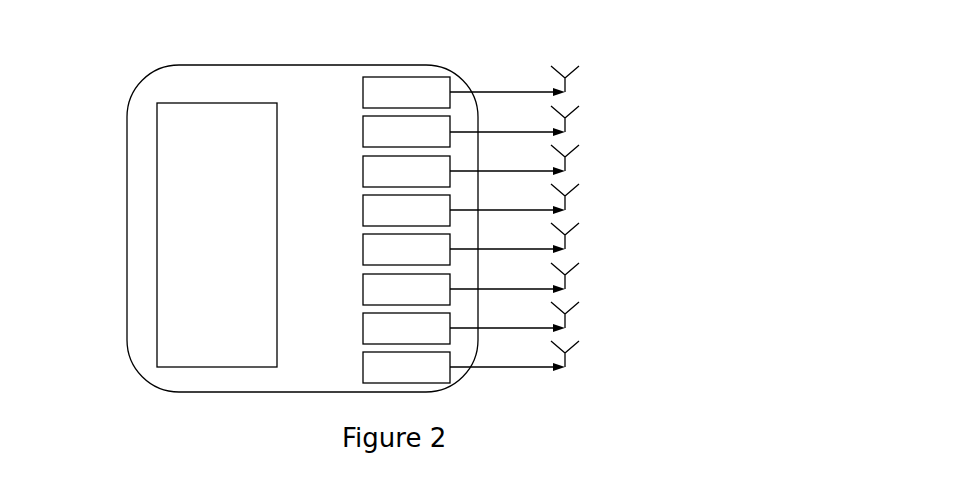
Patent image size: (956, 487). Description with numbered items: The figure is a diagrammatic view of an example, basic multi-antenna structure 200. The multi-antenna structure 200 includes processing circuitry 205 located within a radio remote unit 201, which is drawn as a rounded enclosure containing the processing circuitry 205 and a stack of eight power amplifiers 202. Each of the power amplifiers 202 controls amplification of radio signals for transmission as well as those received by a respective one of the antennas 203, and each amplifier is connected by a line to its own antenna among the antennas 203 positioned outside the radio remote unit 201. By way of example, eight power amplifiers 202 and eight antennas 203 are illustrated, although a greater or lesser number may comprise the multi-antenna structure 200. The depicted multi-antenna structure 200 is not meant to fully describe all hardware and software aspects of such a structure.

The multi-antenna structure 200 is at (519, 70).
The radio remote unit 201 is at (127, 186).
The power amplifiers 202 is at (354, 77).
The antennas 203 is at (594, 68).
The processing circuitry 205 is at (216, 103).